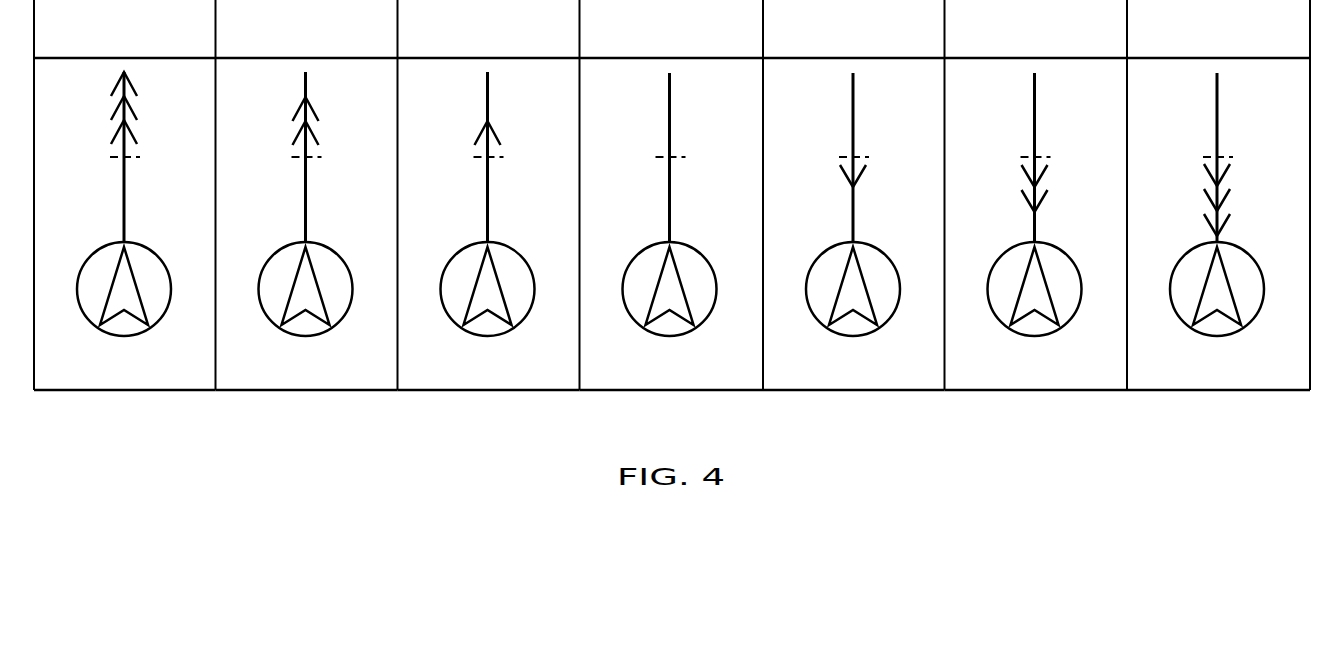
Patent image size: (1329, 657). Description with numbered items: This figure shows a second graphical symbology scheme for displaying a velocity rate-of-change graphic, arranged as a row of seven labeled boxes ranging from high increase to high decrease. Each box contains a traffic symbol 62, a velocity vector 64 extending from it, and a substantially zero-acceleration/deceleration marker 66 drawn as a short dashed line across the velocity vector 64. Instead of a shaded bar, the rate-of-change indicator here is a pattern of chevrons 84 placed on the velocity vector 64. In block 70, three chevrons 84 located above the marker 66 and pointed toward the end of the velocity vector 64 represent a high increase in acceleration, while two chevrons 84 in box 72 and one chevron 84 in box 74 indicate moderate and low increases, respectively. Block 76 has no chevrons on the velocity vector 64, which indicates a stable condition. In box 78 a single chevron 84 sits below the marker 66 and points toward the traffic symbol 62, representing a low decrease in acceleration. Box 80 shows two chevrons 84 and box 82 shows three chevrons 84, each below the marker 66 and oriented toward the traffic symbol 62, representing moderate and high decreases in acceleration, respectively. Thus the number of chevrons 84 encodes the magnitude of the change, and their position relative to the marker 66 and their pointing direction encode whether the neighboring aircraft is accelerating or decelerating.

The traffic symbol 62 is at (102, 266).
The velocity vector 64 is at (124, 227).
The substantially zero-acceleration/deceleration marker 66 is at (110, 157).
The block 70 is at (76, 382).
The box 72 is at (258, 382).
The box 74 is at (440, 382).
The block 76 is at (622, 382).
The box 78 is at (805, 382).
The box 80 is at (986, 382).
The box 82 is at (1169, 382).
The chevron 84 is at (134, 88).